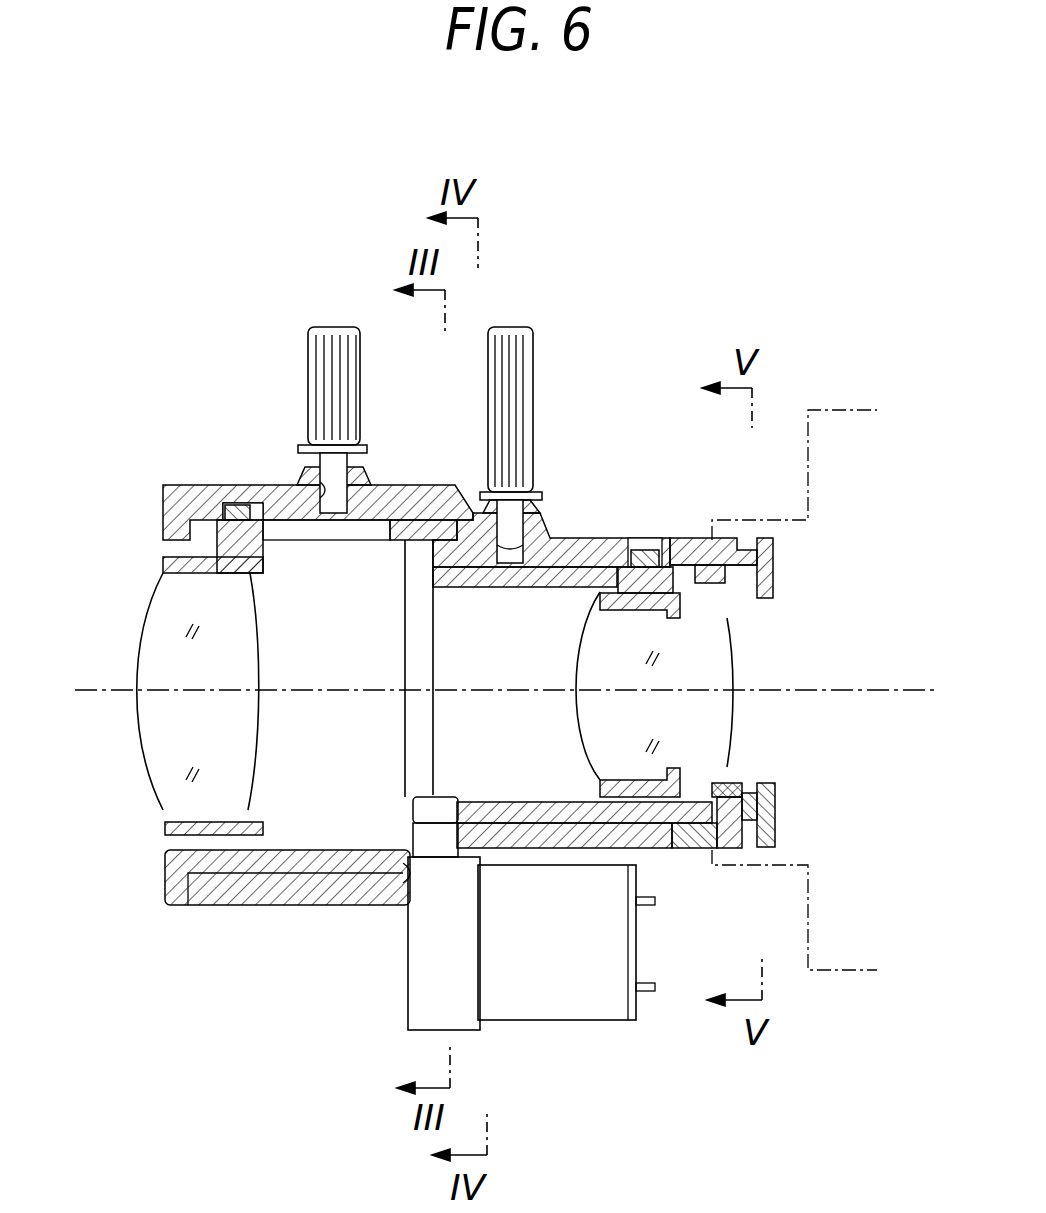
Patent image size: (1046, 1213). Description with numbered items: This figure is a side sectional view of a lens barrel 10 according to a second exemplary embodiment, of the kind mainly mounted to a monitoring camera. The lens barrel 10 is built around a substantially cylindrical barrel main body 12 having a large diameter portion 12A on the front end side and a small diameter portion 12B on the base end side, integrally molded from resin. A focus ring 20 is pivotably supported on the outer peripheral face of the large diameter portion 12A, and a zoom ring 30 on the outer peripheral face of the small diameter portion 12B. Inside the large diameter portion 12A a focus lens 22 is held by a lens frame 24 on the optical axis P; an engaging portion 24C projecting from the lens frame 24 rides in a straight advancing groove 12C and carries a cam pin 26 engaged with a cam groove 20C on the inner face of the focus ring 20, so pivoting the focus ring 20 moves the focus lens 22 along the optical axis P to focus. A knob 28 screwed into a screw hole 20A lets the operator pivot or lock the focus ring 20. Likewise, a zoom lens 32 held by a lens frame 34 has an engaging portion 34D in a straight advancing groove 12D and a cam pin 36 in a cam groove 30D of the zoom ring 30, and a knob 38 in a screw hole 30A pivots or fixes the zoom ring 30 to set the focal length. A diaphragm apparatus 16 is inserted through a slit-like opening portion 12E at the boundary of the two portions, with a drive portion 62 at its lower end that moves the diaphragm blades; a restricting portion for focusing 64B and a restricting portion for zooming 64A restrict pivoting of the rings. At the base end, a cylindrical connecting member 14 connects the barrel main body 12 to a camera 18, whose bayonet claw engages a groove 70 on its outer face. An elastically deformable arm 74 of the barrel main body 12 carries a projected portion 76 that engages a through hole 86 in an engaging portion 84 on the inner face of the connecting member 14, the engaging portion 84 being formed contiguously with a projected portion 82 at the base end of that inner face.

The lens barrel 10 is at (566, 292).
The barrel main body 12 is at (150, 878).
The large diameter portion 12A is at (250, 897).
The small diameter portion 12B is at (518, 824).
The straight advancing groove 12C is at (362, 536).
The straight advancing groove 12D is at (550, 588).
The opening portion 12E is at (357, 897).
The connecting member 14 is at (672, 878).
The diaphragm apparatus 16 is at (396, 1000).
The camera 18 is at (866, 410).
The focus ring 20 is at (410, 483).
The screw hole 20A is at (326, 492).
The cam groove 20C is at (236, 502).
The focus lens 22 is at (152, 742).
The lens frame 24 is at (163, 563).
The engaging portion 24C is at (262, 528).
The cam pin 26 is at (232, 506).
The knob 28 is at (308, 356).
The zoom ring 30 is at (591, 530).
The screw hole 30A is at (512, 570).
The cam groove 30D is at (652, 550).
The zoom lens 32 is at (580, 720).
The lens frame 34 is at (598, 786).
The engaging portion 34D is at (601, 600).
The cam pin 36 is at (645, 550).
The knob 38 is at (490, 370).
The drive portion 62 is at (568, 1021).
The restricting portion for zooming 64A is at (437, 832).
The restricting portion for focusing 64B is at (437, 788).
The groove 70 is at (727, 540).
The arm 74 is at (776, 805).
The projected portion 76 is at (745, 848).
The projected portion 82 is at (765, 599).
The engaging portion 84 is at (740, 784).
The through hole 86 is at (722, 850).
The optical axis P is at (92, 690).